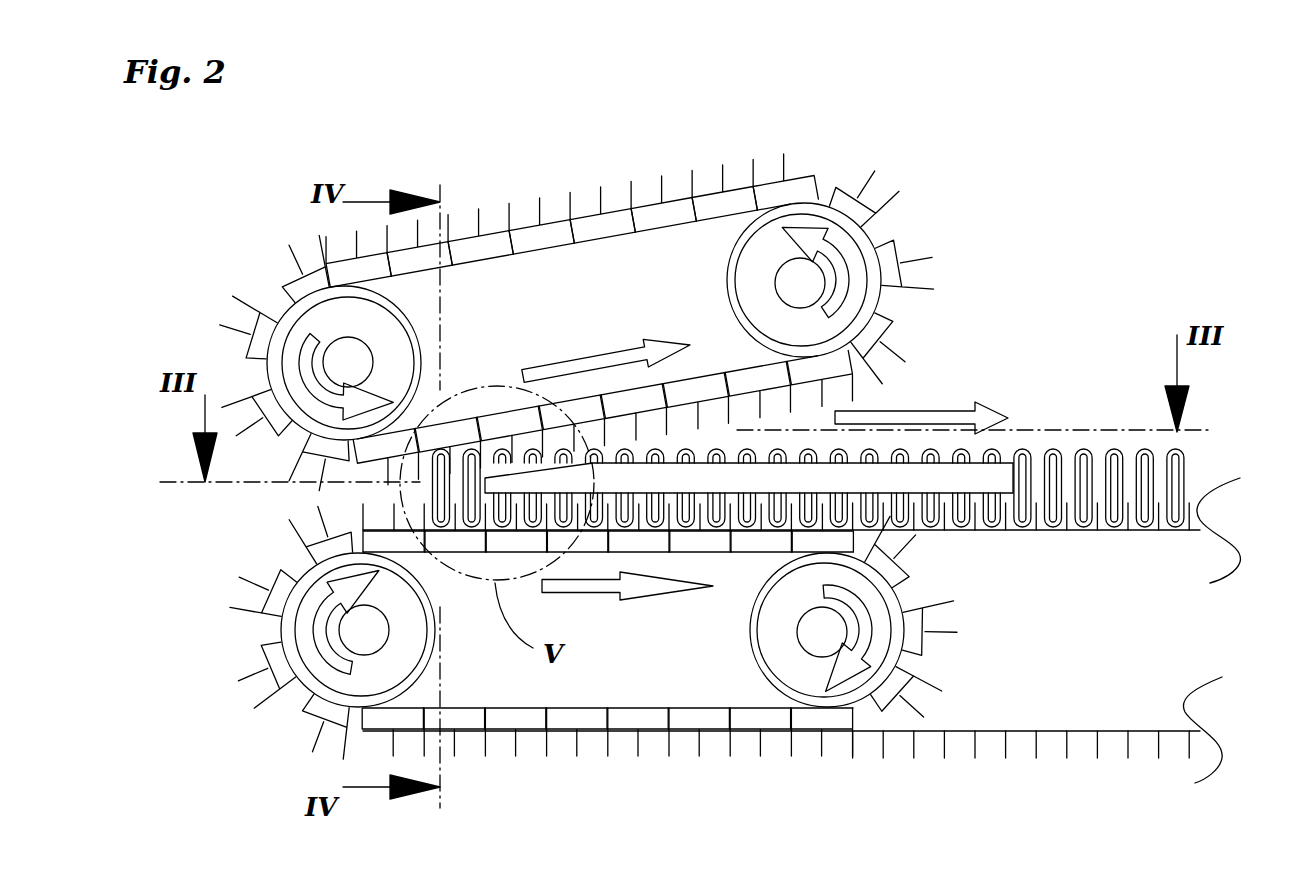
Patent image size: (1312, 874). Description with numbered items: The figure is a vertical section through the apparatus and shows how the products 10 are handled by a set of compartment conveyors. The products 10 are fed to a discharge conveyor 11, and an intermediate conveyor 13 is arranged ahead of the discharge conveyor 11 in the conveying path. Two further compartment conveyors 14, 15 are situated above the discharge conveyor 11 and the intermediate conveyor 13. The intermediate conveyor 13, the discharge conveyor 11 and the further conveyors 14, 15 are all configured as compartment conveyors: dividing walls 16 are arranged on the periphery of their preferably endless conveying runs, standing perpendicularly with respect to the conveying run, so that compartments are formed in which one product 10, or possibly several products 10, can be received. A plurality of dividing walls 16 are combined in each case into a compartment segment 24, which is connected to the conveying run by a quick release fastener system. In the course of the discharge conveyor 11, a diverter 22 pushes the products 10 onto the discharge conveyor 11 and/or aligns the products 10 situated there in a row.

The products 10 is at (1175, 468).
The discharge conveyor 11 is at (1069, 382).
The intermediate conveyor 13 is at (1017, 622).
The further compartment conveyor 14 is at (625, 132).
The further compartment conveyor 15 is at (575, 270).
The dividing walls 16 is at (597, 195).
The diverter 22 is at (1000, 475).
The compartment segment 24 is at (863, 146).